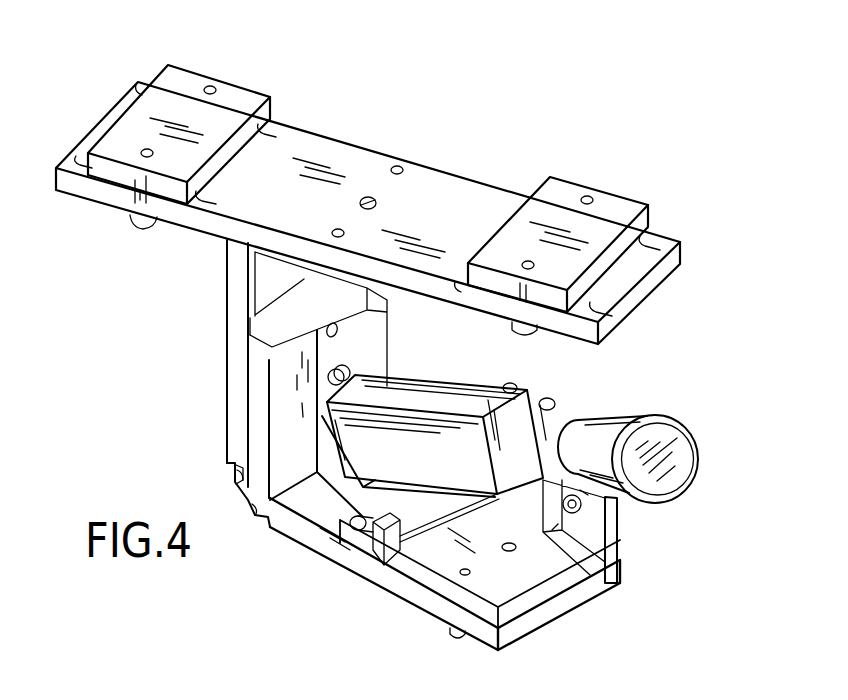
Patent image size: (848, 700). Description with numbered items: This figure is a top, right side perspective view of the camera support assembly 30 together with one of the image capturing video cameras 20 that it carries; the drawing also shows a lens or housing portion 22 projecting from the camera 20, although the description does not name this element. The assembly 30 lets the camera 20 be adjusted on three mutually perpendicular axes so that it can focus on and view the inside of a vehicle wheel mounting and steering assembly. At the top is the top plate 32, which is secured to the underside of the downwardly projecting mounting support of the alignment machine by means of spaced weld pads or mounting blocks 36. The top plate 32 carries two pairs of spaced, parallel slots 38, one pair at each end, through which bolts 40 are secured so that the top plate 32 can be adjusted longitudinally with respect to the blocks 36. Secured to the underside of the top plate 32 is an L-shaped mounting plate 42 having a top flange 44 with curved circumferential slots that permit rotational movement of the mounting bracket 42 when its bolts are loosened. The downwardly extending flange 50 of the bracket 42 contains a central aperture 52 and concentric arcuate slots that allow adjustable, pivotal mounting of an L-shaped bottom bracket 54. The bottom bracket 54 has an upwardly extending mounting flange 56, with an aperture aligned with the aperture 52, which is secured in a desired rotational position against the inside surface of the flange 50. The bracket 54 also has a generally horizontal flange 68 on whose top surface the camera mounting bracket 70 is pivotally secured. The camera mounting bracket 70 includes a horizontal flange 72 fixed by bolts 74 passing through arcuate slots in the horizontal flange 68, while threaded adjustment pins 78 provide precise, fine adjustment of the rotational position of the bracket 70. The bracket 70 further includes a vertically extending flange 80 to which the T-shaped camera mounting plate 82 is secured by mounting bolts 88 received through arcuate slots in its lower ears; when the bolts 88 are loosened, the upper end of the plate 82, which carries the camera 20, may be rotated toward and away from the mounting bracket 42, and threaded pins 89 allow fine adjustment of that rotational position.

The image capturing video camera 20 is at (428, 463).
The cylindrical handle 22 is at (615, 410).
The camera support assembly 30 is at (493, 128).
The top plate 32 is at (337, 157).
The mounting blocks 36 is at (235, 100).
The slots 38 is at (272, 137).
The bolts 40 is at (134, 228).
The L-shaped mounting plate 42 is at (226, 313).
The top flange 44 is at (388, 300).
The downwardly extending flange 50 is at (235, 395).
The central aperture 52 is at (250, 316).
The L-shaped bottom bracket 54 is at (392, 598).
The mounting flange 56 is at (290, 437).
The horizontal flange 68 is at (312, 500).
The camera mounting bracket 70 is at (590, 578).
The horizontal flange 72 is at (520, 581).
The bolts 74 is at (457, 632).
The threaded adjustment pins 78 is at (360, 565).
The vertically extending flange 80 is at (610, 503).
The T-shaped camera mounting plate 82 is at (462, 597).
The mounting bolts 88 is at (603, 525).
The threaded pins 89 is at (552, 530).